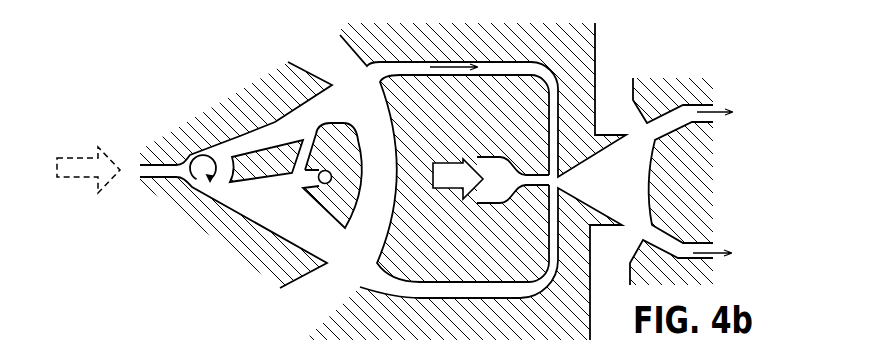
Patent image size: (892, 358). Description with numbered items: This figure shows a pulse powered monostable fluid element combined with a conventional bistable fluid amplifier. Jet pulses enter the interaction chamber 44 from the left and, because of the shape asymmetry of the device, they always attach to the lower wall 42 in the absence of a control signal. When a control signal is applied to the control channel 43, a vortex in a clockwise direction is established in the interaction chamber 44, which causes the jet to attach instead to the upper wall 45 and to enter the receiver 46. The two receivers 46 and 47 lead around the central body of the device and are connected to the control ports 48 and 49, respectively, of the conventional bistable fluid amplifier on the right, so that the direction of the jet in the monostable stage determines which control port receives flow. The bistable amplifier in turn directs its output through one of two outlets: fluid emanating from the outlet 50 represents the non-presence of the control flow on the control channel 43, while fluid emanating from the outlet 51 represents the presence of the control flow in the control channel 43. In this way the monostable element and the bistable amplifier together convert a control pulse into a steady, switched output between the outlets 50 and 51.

The lower wall 42 is at (243, 207).
The control channel 43 is at (304, 187).
The interaction chamber 44 is at (188, 156).
The upper wall 45 is at (270, 122).
The receiver 46 is at (495, 62).
The receiver 47 is at (492, 293).
The control port 48 is at (550, 167).
The control port 49 is at (552, 190).
The outlet 50 is at (713, 117).
The outlet 51 is at (710, 257).